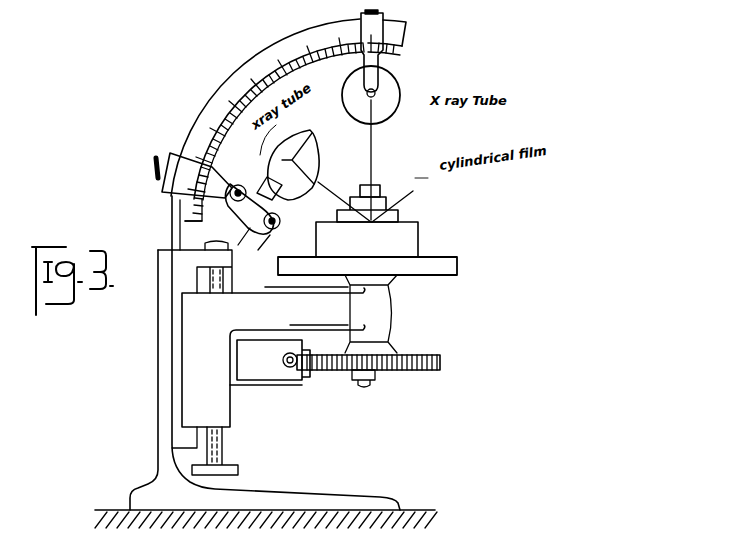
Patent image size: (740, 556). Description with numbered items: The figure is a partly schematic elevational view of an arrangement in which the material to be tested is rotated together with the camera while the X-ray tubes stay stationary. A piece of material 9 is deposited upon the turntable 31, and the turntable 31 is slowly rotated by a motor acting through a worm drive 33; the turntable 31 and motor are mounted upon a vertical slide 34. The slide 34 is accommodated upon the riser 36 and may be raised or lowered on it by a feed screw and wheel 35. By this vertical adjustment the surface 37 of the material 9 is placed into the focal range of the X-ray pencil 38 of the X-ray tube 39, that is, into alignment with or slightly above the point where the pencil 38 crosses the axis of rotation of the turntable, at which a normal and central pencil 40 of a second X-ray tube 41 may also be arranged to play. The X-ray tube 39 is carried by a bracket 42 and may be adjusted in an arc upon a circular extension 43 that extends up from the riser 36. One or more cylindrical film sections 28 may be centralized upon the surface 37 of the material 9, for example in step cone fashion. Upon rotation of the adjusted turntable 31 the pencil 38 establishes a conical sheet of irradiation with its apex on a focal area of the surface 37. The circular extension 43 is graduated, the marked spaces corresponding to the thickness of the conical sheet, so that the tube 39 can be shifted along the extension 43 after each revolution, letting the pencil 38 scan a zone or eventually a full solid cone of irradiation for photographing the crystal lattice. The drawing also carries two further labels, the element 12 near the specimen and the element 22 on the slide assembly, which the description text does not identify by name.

The piece of material 9 is at (418, 246).
The specimen 12 is at (400, 204).
The carriage 22 is at (272, 382).
The cylindrical film sections 28 is at (380, 188).
The turntable 31 is at (443, 275).
The worm drive 33 is at (420, 370).
The vertical slide 34 is at (185, 385).
The feed screw and wheel 35 is at (240, 470).
The riser 36 is at (158, 432).
The surface 37 is at (398, 216).
The X-ray pencil 38 is at (325, 184).
The X-ray tube 39 is at (318, 158).
The normal and central pencil 40 is at (376, 160).
The second X-ray tube 41 is at (402, 92).
The bracket 42 is at (174, 155).
The circular extension 43 is at (242, 68).